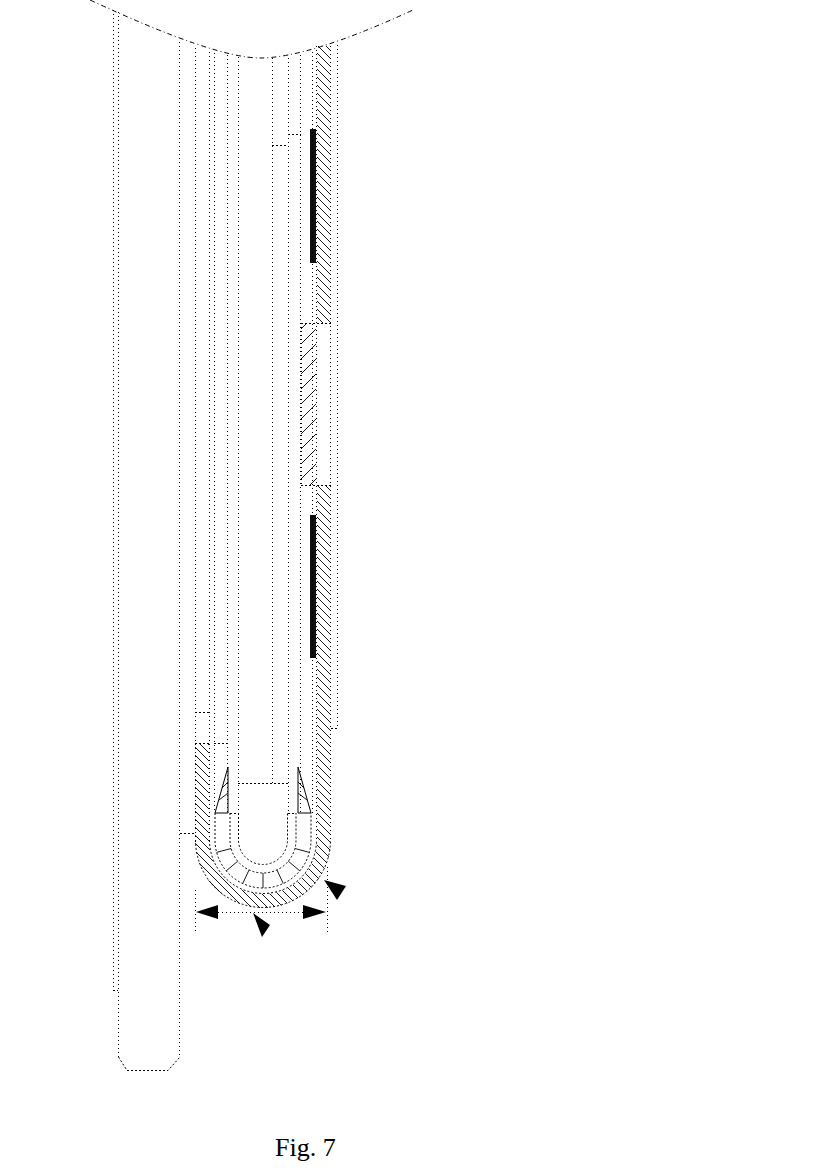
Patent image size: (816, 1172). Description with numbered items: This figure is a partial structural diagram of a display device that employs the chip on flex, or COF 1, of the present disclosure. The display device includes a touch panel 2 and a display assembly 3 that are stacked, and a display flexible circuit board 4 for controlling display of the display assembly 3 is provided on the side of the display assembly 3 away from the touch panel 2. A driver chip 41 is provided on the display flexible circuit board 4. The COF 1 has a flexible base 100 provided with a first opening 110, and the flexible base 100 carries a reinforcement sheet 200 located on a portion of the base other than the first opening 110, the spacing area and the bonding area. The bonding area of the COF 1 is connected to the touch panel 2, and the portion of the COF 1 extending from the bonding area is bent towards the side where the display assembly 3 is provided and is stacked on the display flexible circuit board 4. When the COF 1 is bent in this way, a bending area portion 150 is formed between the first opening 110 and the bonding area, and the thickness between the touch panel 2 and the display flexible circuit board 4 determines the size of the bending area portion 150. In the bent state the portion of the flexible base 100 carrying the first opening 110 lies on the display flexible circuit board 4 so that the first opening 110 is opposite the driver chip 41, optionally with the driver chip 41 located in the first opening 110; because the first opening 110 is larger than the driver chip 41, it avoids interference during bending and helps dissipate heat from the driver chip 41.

The COF 1 is at (340, 895).
The touch panel 2 is at (187, 602).
The display assembly 3 is at (263, 712).
The display flexible circuit board 4 is at (288, 298).
The driver chip 41 is at (308, 456).
The flexible base 100 is at (333, 677).
The first opening 110 is at (323, 400).
The bending area portion 150 is at (266, 932).
The reinforcement sheet 200 is at (318, 180).